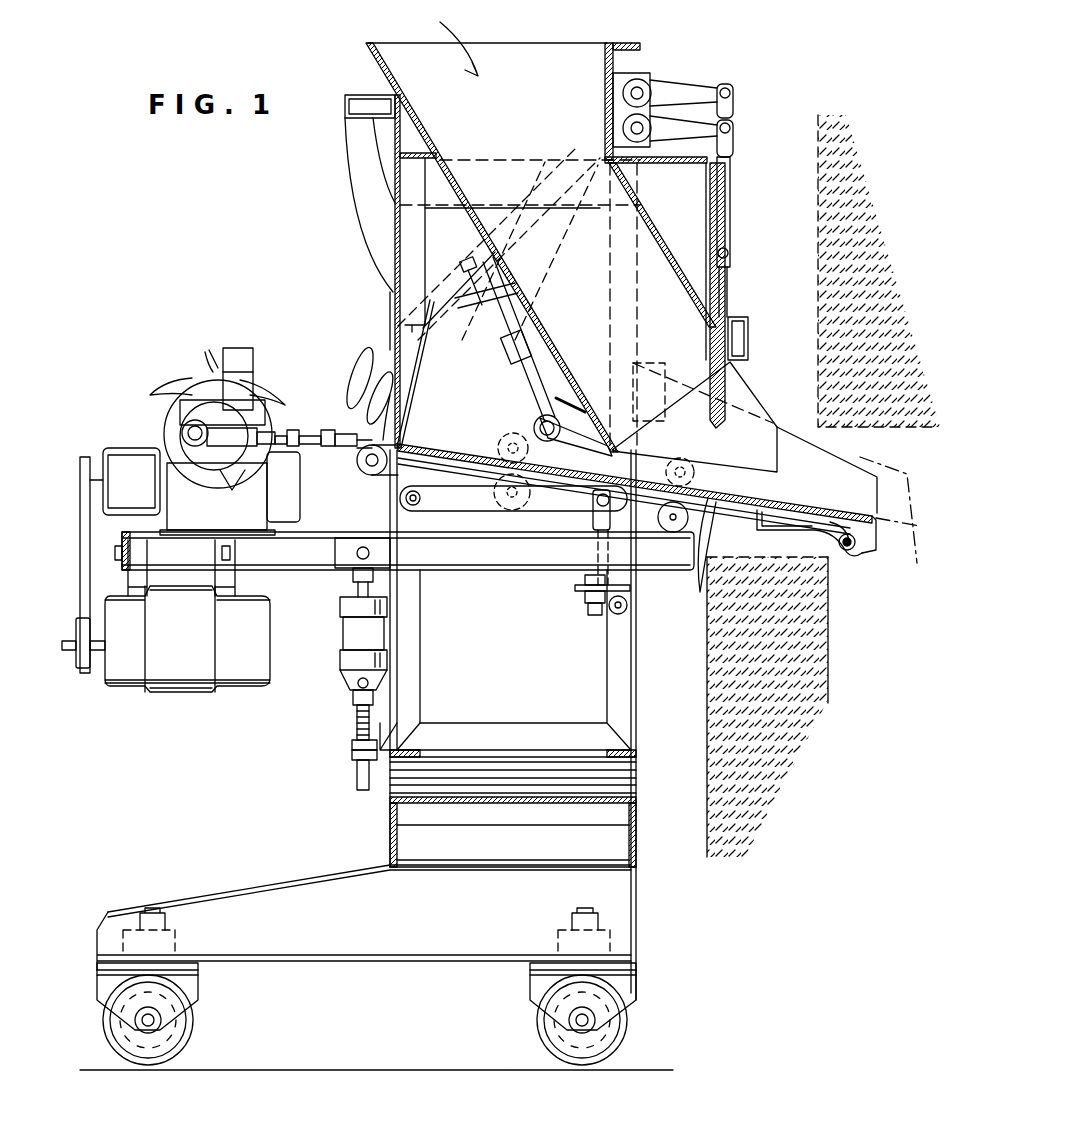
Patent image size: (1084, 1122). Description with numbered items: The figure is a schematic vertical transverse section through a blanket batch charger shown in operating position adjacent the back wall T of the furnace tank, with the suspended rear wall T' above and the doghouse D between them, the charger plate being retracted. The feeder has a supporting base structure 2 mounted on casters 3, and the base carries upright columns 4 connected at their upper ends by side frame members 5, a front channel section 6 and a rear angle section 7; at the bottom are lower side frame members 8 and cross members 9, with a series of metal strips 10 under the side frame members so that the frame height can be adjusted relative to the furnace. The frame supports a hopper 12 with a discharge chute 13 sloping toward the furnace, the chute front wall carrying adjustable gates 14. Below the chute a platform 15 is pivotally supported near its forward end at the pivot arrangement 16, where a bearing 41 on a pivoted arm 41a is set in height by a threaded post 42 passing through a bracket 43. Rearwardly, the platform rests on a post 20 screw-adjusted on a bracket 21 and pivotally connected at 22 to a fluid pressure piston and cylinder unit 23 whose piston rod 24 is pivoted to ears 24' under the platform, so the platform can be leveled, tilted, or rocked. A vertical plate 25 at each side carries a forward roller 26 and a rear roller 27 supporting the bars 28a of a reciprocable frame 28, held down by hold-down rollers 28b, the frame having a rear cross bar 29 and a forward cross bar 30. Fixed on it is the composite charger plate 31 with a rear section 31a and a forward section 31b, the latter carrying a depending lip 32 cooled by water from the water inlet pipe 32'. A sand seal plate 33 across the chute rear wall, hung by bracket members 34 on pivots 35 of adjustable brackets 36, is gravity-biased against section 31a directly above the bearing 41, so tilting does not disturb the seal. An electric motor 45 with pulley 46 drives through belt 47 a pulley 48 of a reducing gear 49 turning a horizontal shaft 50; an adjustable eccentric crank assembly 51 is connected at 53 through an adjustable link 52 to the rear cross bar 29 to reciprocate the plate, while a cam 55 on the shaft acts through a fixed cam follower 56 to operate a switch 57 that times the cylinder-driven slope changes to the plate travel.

The supporting base structure 2 is at (375, 955).
The casters 3 is at (190, 1038).
The upright columns 4 is at (420, 645).
The side frame members 5 is at (447, 210).
The front channel section 6 is at (636, 47).
The rear angle section 7 is at (386, 140).
The lower side frame members 8 is at (518, 732).
The cross members 9 is at (398, 725).
The metal strips 10 is at (522, 802).
The hopper 12 is at (378, 52).
The discharge chute 13 is at (712, 434).
The adjustable gates 14 is at (727, 390).
The platform 15 is at (455, 575).
The pivot arrangement 16 is at (572, 454).
The post 20 is at (357, 722).
The bracket 21 is at (352, 752).
The pivotal connection 22 is at (350, 685).
The fluid pressure piston and cylinder unit 23 is at (343, 634).
The piston rod 24 is at (339, 582).
The ears 24' is at (404, 551).
The vertical plate 25 is at (488, 512).
The forward roller 26 is at (670, 532).
The rear roller 27 is at (485, 482).
The reciprocable frame 28 is at (405, 362).
The bar 28a is at (530, 492).
The hold-down rollers 28b is at (498, 446).
The rear cross bar 29 is at (372, 478).
The forward cross bar 30 is at (752, 520).
The composite charger plate 31 is at (798, 495).
The rear section 31a is at (440, 445).
The forward section 31b is at (828, 506).
The lip 32 is at (865, 557).
The water inlet pipe 32' is at (809, 533).
The sand seal plate 33 is at (600, 412).
The bracket members 34 is at (528, 386).
The pivots 35 is at (537, 420).
The adjustable brackets 36 is at (506, 352).
The bearing 41 is at (576, 427).
The pivoted arm 41a is at (593, 508).
The threaded post 42 is at (592, 612).
The bracket 43 is at (575, 588).
The electric motor 45 is at (200, 692).
The pulley 46 is at (85, 672).
The belt 47 is at (80, 578).
The pulley 48 is at (103, 455).
The reducing gear 49 is at (265, 400).
The horizontal shaft 50 is at (230, 482).
The adjustable eccentric crank assembly 51 is at (245, 398).
The adjustable link 52 is at (290, 430).
The pivotal connection 53 is at (182, 433).
The cam 55 is at (175, 392).
The fixed cam follower 56 is at (206, 352).
The switch 57 is at (240, 352).
The back wall of the furnace tank T is at (795, 707).
The suspended rear wall of the furnace T' is at (858, 271).
The doghouse D is at (896, 456).